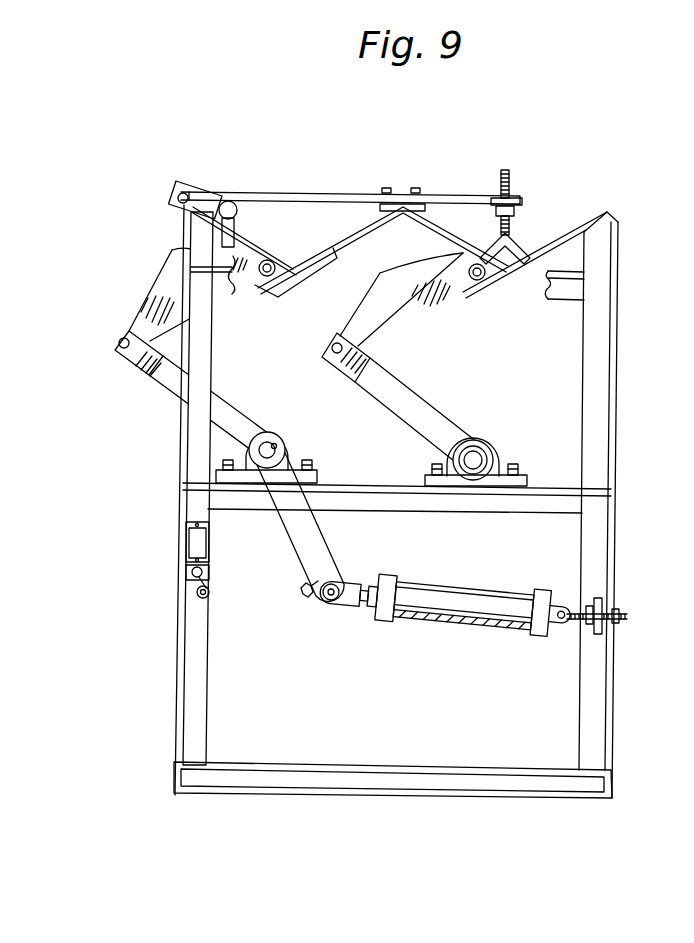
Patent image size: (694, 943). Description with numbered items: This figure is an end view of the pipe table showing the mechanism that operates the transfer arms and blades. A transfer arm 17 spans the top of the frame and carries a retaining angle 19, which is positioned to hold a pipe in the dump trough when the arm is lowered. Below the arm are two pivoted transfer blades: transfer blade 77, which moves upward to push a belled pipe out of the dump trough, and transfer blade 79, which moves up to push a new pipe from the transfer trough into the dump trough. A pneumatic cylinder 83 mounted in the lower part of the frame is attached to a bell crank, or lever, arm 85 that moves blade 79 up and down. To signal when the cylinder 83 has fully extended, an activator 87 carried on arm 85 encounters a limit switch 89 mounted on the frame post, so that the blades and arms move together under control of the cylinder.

The transfer arm 17 is at (451, 196).
The retaining angle 19 is at (520, 248).
The transfer blade 77 is at (406, 298).
The transfer blade 79 is at (238, 283).
The pneumatic cylinder 83 is at (455, 606).
The bell crank arm 85 is at (172, 383).
The activator 87 is at (303, 597).
The limit switch 89 is at (197, 548).